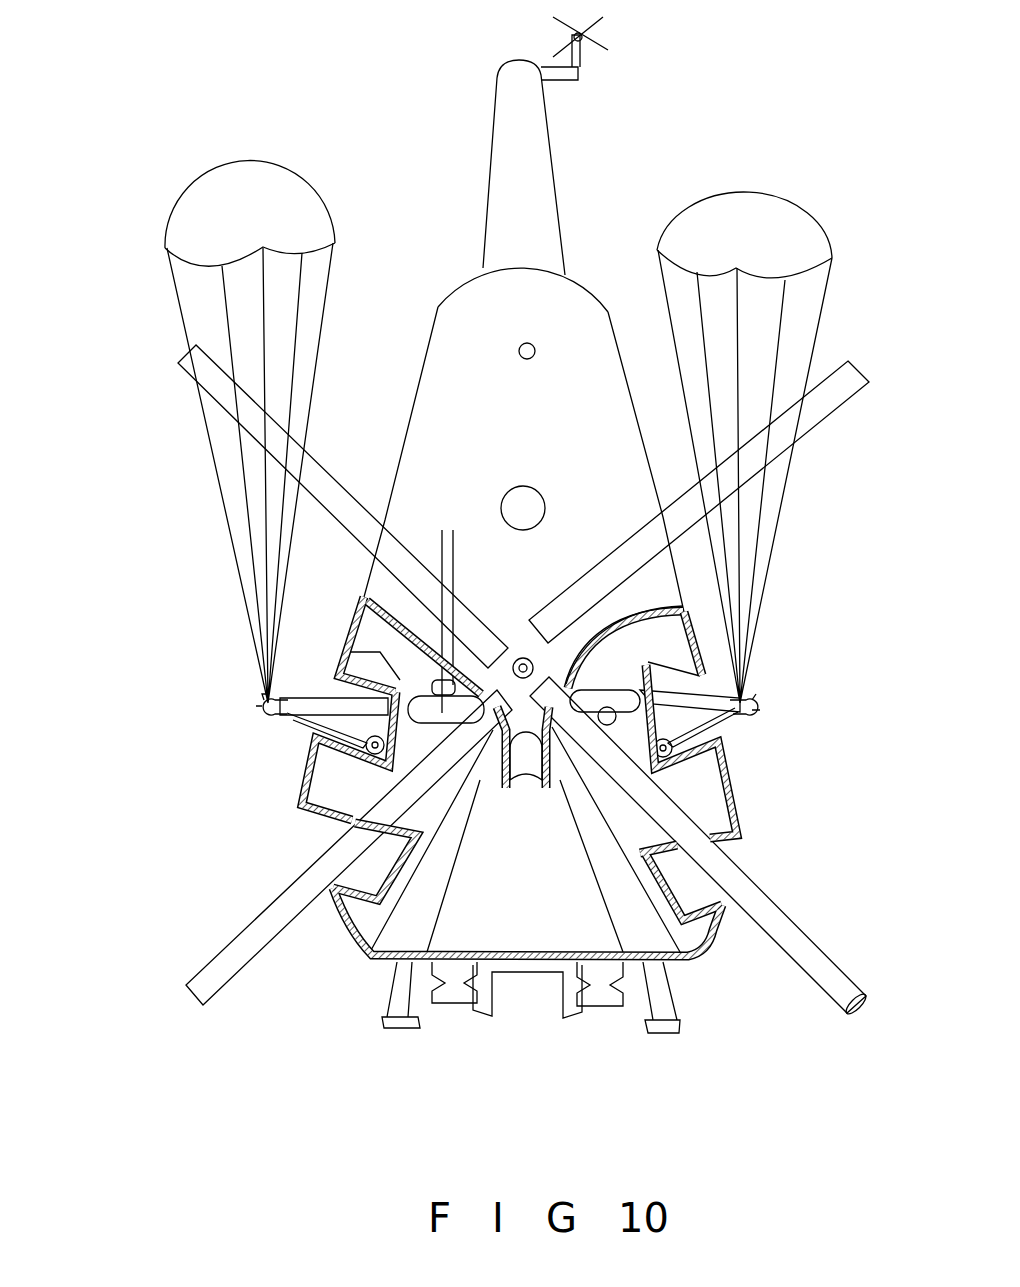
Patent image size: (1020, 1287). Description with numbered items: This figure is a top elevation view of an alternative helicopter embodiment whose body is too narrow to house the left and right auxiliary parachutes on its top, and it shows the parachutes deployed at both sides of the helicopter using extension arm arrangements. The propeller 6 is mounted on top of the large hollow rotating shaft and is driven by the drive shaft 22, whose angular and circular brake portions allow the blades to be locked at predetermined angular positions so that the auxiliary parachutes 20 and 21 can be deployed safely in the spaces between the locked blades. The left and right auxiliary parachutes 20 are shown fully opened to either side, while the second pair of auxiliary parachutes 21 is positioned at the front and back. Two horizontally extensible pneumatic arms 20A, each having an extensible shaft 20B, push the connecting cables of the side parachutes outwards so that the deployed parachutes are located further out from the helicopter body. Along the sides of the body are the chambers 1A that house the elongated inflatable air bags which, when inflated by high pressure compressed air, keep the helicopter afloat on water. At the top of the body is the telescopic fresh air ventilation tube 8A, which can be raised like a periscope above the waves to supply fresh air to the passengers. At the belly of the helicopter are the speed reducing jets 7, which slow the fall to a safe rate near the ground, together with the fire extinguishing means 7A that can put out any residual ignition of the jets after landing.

The chambers 1A is at (332, 830).
The propeller 6 is at (752, 462).
The speed reducing jets 7 is at (603, 1003).
The fire extinguishing means 7A is at (542, 975).
The telescopic fresh air ventilation tube 8A is at (519, 352).
The auxiliary parachutes 20 is at (357, 680).
The horizontally extensible pneumatic arms 20A is at (446, 606).
The extensible shaft 20B is at (262, 707).
The auxiliary parachutes 21 is at (545, 516).
The drive shaft 22 is at (567, 660).